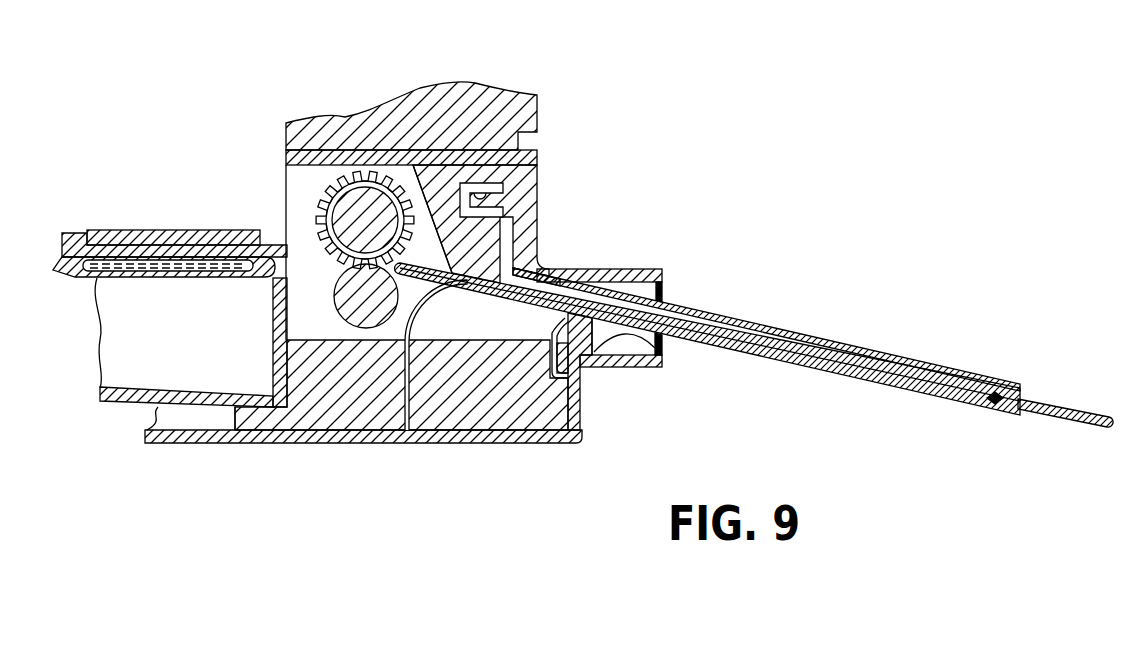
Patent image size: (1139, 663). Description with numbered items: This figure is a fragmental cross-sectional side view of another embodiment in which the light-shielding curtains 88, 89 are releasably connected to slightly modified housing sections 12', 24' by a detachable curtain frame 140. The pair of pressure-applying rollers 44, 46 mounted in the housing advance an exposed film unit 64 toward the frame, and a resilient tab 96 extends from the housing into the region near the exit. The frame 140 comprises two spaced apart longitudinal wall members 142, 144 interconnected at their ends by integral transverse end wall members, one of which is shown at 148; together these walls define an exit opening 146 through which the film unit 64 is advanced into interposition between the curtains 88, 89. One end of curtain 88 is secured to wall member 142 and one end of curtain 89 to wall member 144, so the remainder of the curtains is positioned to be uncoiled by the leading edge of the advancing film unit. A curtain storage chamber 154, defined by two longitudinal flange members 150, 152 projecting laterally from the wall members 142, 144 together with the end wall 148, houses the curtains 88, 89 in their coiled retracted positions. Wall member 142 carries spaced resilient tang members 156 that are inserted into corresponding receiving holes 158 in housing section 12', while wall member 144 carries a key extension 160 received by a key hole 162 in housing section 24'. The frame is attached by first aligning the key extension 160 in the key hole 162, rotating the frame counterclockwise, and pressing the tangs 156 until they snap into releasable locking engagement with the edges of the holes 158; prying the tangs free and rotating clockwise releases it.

The housing section 12' is at (465, 173).
The housing section 24' is at (393, 393).
The roller 44 is at (318, 205).
The roller 46 is at (335, 303).
The film unit 64 is at (915, 365).
The curtain member 88 is at (794, 334).
The curtain member 89 is at (838, 384).
The resilient tab 96 is at (424, 305).
The detachable curtain frame 140 is at (656, 323).
The longitudinal wall member 142 is at (542, 192).
The longitudinal wall member 144 is at (662, 355).
The exit opening 146 is at (553, 288).
The transverse end wall member 148 is at (664, 300).
The longitudinal flange member 150 is at (602, 270).
The longitudinal flange member 152 is at (655, 368).
The curtain storage chamber 154 is at (643, 358).
The resilient tang member 156 is at (440, 165).
The receiving hole 158 is at (465, 185).
The key extension 160 is at (580, 380).
The key hole 162 is at (548, 354).